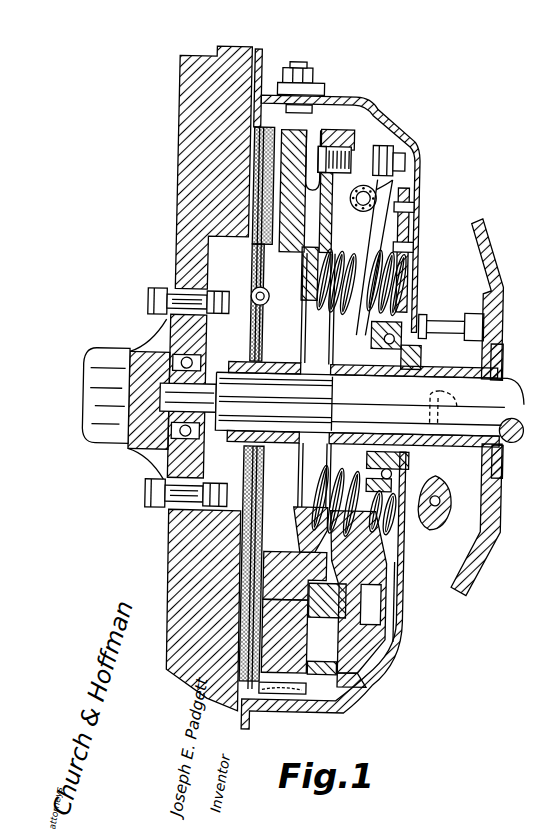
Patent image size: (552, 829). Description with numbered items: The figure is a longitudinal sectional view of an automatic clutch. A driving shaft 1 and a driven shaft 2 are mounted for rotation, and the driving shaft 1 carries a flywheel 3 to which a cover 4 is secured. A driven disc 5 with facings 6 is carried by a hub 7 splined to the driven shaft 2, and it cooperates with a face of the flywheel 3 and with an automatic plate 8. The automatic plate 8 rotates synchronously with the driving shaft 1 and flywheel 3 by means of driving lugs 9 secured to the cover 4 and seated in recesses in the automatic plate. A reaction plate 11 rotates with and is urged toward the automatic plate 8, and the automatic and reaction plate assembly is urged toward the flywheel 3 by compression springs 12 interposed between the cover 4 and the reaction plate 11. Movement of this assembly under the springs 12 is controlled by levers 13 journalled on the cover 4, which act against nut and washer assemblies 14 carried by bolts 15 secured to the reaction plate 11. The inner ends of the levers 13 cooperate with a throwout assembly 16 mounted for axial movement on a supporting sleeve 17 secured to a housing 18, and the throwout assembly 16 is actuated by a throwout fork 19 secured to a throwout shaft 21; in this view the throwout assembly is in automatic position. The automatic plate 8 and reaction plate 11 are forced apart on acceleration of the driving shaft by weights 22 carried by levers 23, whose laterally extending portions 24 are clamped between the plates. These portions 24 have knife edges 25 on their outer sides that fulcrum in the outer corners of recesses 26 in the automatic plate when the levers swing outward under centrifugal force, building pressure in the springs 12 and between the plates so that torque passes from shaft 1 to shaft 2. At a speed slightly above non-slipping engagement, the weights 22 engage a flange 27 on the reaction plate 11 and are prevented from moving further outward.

The driving shaft 1 is at (94, 372).
The driven shaft 2 is at (500, 398).
The flywheel 3 is at (210, 212).
The cover 4 is at (249, 732).
The driven disc 5 is at (255, 252).
The facings 6 is at (253, 167).
The hub 7 is at (237, 442).
The automatic plate 8 is at (243, 650).
The driving lugs 9 is at (292, 695).
The reaction plate 11 is at (322, 674).
The compression springs 12 is at (395, 280).
The levers 13 is at (360, 252).
The nut and washer assemblies 14 is at (391, 140).
The bolts 15 is at (333, 137).
The throwout assembly 16 is at (385, 374).
The supporting sleeve 17 is at (504, 450).
The housing 18 is at (500, 280).
The throwout fork 19 is at (445, 515).
The throwout shaft 21 is at (438, 468).
The weights 22 is at (401, 645).
The levers 23 is at (390, 608).
The laterally extending portions 24 is at (300, 612).
The knife edges 25 is at (300, 592).
The recesses 26 is at (300, 578).
The flange 27 is at (360, 692).